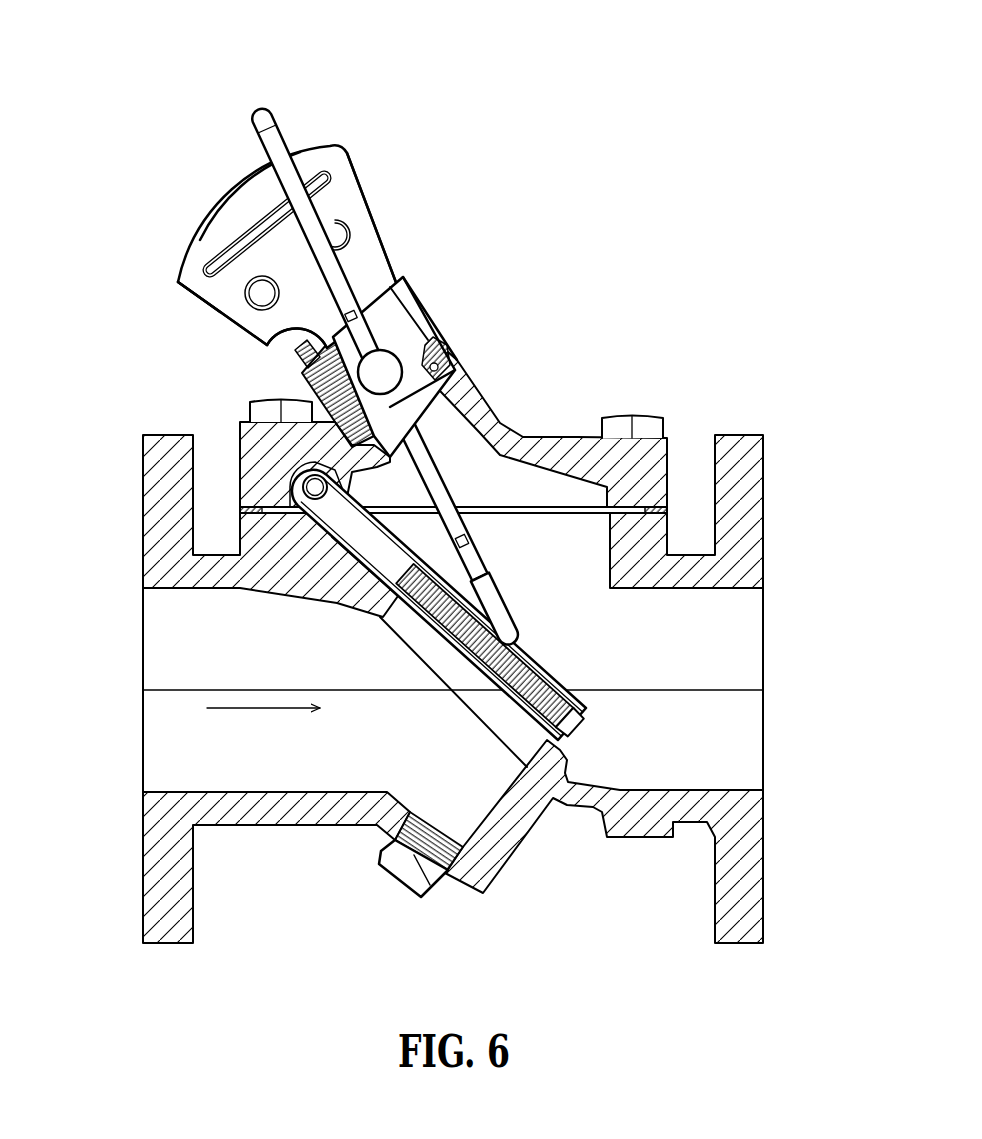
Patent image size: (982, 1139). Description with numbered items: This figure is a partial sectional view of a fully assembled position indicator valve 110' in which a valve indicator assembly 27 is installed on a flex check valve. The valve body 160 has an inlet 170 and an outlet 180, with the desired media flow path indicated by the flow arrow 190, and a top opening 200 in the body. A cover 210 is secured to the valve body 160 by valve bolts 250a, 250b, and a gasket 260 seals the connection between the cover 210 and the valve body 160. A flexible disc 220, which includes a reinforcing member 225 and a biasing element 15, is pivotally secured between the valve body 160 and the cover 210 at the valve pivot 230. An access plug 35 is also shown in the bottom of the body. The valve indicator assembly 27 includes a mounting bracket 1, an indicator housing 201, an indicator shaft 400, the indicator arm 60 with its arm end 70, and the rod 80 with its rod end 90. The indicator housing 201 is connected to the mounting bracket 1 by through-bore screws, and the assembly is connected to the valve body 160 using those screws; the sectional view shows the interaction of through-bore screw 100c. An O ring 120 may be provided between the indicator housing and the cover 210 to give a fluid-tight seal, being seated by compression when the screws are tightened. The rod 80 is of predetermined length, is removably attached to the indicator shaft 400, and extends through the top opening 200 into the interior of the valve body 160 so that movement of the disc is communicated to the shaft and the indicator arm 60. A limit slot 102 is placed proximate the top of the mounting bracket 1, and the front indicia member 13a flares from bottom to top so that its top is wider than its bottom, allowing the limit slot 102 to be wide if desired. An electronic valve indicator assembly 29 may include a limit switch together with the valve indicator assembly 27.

The mounting bracket 1 is at (352, 165).
The front indicia member 13a is at (185, 288).
The biasing element 15 is at (377, 565).
The valve indicator assembly 27 is at (170, 190).
The electronic valve indicator assembly 29 is at (195, 110).
The access plug 35 is at (443, 875).
The indicator arm 60 is at (323, 146).
The arm end 70 is at (262, 109).
The rod 80 is at (446, 492).
The rod end 90 is at (512, 612).
The through-bore screw 100c is at (290, 352).
The limit slot 102 is at (205, 273).
The position indicator valve 110' is at (453, 372).
The O ring 120 is at (450, 350).
The valve body 160 is at (755, 435).
The inlet 170 is at (145, 645).
The outlet 180 is at (763, 655).
The flow arrow 190 is at (263, 708).
The top opening 200 is at (558, 515).
The indicator housing 201 is at (424, 312).
The cover 210 is at (580, 437).
The flexible disc 220 is at (565, 705).
The reinforcing member 225 is at (515, 690).
The valve pivot 230 is at (305, 482).
The valve bolt 250a is at (298, 372).
The valve bolt 250b is at (648, 415).
The gasket 260 is at (668, 508).
The indicator shaft 400 is at (392, 345).